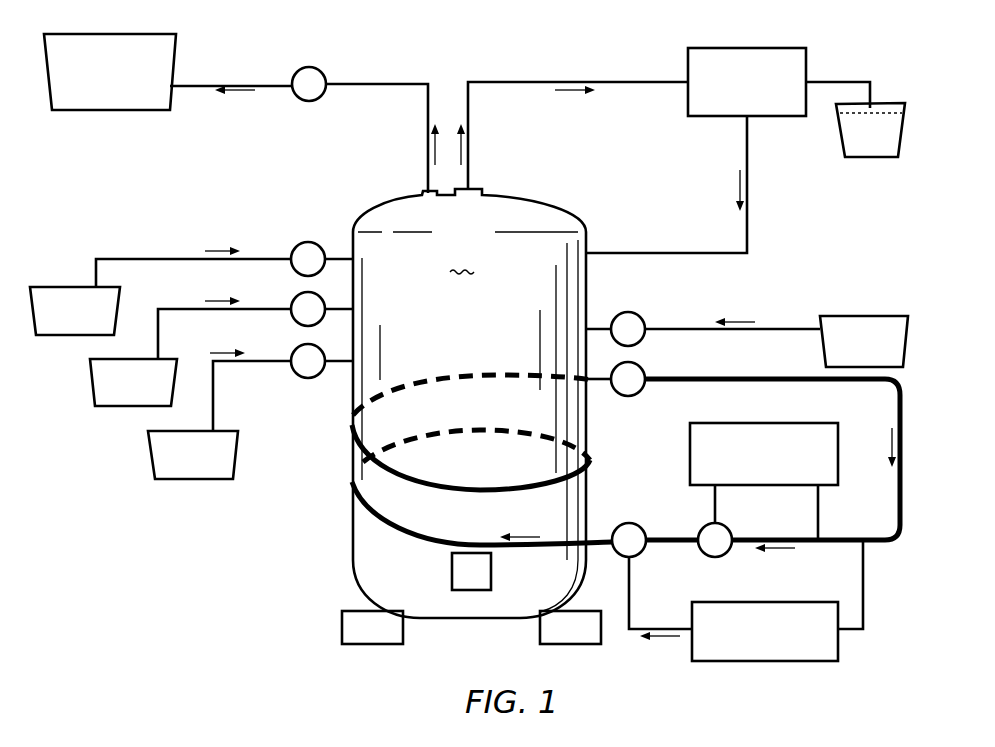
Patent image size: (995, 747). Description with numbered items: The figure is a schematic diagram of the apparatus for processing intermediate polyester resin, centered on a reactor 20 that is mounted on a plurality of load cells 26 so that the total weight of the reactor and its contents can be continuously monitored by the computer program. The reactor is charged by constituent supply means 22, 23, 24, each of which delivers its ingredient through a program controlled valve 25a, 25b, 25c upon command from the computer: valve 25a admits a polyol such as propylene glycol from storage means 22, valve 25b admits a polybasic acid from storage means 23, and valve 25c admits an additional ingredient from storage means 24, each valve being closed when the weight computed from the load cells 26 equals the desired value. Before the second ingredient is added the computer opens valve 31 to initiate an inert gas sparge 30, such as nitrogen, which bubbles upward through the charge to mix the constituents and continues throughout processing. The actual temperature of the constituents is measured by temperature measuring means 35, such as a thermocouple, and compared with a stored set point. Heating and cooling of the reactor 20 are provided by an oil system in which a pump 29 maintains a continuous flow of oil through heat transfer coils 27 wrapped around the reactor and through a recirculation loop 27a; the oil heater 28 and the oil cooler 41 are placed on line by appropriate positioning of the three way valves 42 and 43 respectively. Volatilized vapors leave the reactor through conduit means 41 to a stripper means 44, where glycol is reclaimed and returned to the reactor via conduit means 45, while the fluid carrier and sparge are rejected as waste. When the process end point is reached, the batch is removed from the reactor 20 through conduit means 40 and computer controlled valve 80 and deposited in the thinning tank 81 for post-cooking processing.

The reactor 20 is at (469, 403).
The constituent supply means 22 is at (58, 336).
The constituent supply means 23 is at (112, 407).
The constituent supply means 24 is at (170, 480).
The valve 25a is at (300, 245).
The valve 25b is at (300, 298).
The valve 25c is at (298, 350).
The load cells 26 is at (342, 630).
The heat transfer coils 27 is at (365, 523).
The recirculation loop 27a is at (735, 379).
The oil heater 28 is at (706, 602).
The pump 29 is at (624, 397).
The inert gas sparge 30 is at (830, 316).
The valve 31 is at (660, 296).
The temperature measuring means 35 is at (491, 572).
The conduit means 40 is at (366, 84).
The conduit means / oil cooler 41 is at (502, 84).
The three way valve 42 is at (630, 523).
The three way valve 43 is at (706, 527).
The stripper means 44 is at (768, 20).
The conduit means 45 is at (688, 250).
The valve 80 is at (332, 54).
The thinning tank 81 is at (140, 34).